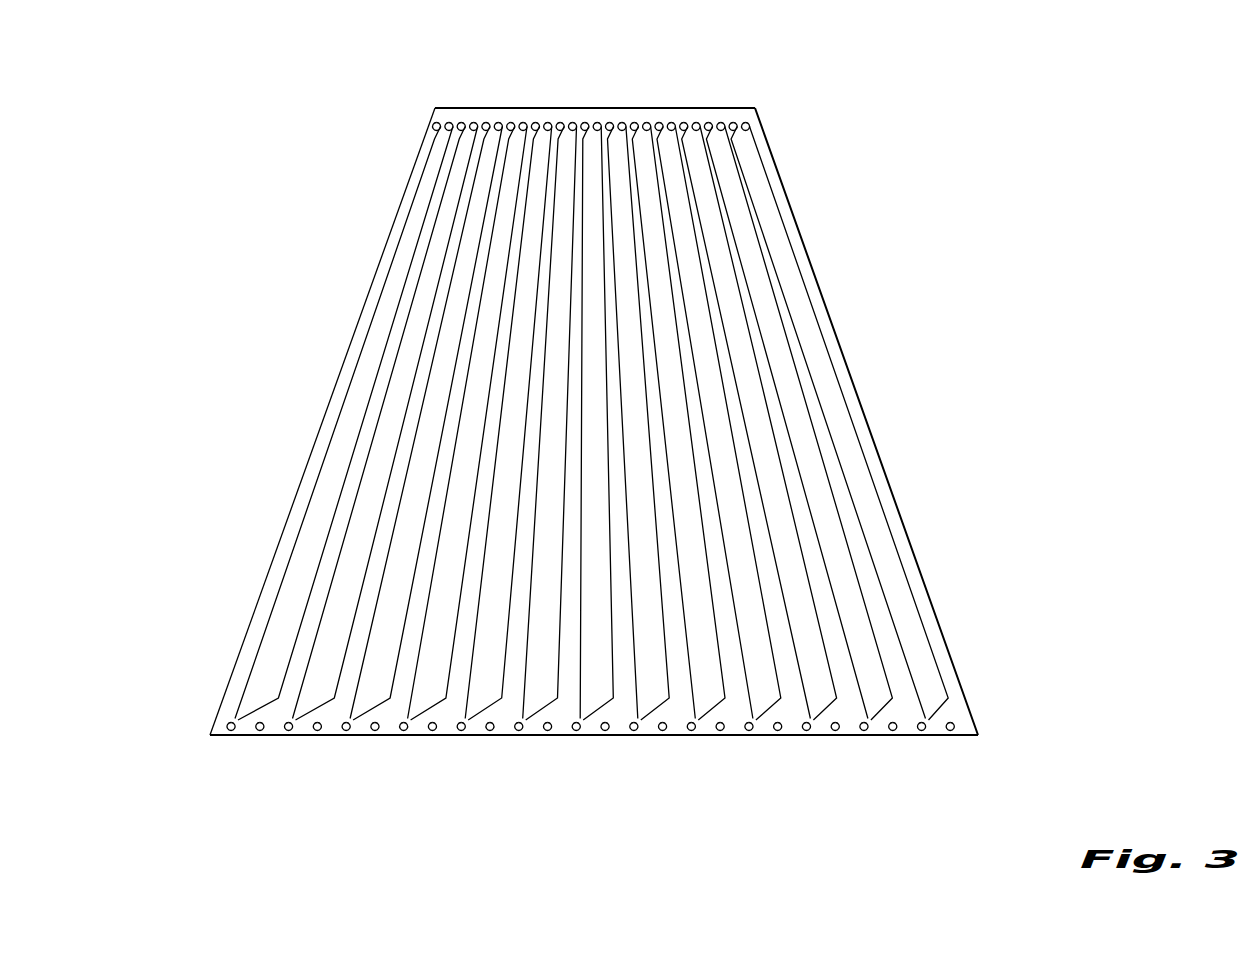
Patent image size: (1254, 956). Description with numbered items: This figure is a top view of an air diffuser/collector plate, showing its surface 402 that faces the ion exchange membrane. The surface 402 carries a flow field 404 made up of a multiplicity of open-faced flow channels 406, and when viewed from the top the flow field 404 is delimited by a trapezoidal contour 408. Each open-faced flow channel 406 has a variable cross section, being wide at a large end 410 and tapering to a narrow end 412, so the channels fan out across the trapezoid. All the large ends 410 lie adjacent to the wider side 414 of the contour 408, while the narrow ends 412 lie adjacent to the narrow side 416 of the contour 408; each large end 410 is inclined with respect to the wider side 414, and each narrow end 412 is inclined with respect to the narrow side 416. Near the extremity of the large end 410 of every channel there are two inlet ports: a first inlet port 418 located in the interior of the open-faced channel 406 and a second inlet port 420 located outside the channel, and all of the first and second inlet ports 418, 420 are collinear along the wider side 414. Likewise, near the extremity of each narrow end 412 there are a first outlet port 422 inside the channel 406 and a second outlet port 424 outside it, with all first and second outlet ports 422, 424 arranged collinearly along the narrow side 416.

The surface 402 is at (618, 527).
The flow field 404 is at (365, 360).
The open-faced flow channel 406 is at (832, 388).
The trapezoidal contour 408 is at (345, 465).
The large end 410 is at (262, 668).
The narrow end 412 is at (440, 141).
The wider side 414 is at (677, 724).
The narrow side 416 is at (600, 117).
The first inlet port 418 is at (403, 726).
The second inlet port 420 is at (490, 726).
The first outlet port 422 is at (437, 119).
The second outlet port 424 is at (750, 121).